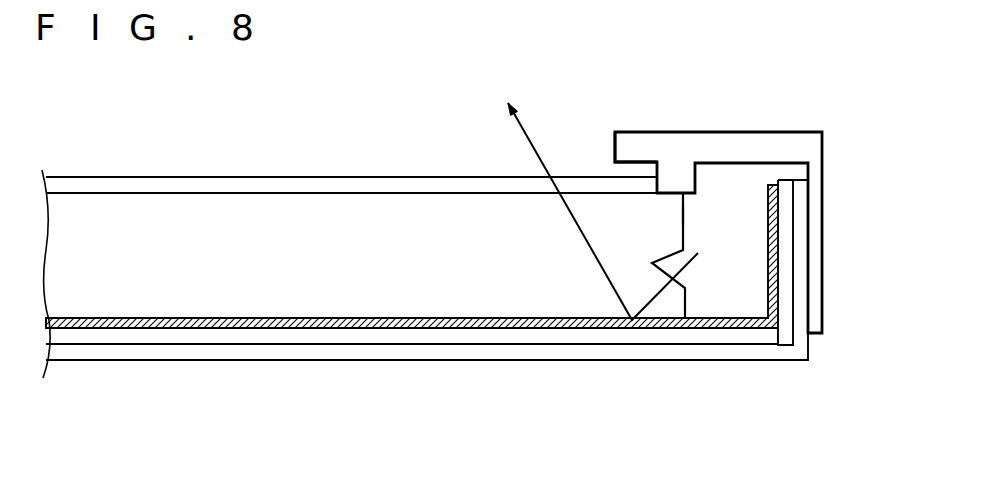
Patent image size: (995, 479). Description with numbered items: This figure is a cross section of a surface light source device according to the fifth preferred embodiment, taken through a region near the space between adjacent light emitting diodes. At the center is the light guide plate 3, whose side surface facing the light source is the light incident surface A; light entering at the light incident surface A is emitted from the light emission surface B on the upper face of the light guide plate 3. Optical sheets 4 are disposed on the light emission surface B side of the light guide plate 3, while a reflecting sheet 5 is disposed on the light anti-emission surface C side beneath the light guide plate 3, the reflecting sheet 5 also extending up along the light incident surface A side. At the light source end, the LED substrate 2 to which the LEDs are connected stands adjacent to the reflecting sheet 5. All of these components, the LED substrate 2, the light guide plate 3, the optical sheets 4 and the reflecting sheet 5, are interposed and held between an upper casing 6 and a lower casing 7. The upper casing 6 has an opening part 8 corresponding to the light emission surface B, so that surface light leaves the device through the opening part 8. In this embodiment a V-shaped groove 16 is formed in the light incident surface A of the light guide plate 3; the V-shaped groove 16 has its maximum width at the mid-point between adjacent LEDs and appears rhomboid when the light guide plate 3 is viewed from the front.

The LED substrate 2 is at (785, 333).
The light guide plate 3 is at (458, 215).
The optical sheets 4 is at (289, 187).
The reflecting sheet 5 is at (242, 330).
The upper casing 6 is at (740, 147).
The lower casing 7 is at (408, 352).
The opening part 8 is at (614, 147).
The V-shaped groove 16 is at (667, 257).
The light incident surface A is at (684, 215).
The light emission surface B is at (379, 193).
The light anti-emission surface C is at (330, 323).